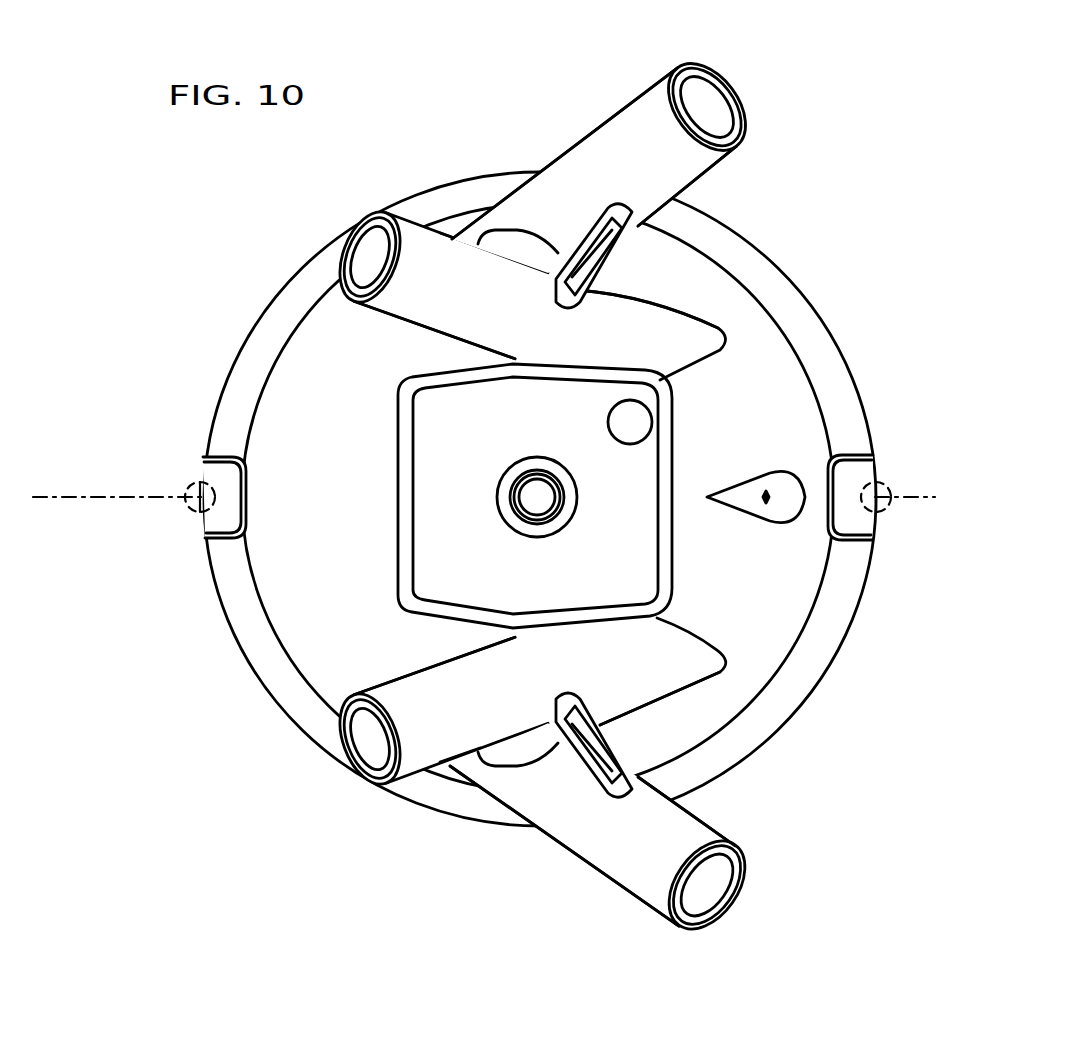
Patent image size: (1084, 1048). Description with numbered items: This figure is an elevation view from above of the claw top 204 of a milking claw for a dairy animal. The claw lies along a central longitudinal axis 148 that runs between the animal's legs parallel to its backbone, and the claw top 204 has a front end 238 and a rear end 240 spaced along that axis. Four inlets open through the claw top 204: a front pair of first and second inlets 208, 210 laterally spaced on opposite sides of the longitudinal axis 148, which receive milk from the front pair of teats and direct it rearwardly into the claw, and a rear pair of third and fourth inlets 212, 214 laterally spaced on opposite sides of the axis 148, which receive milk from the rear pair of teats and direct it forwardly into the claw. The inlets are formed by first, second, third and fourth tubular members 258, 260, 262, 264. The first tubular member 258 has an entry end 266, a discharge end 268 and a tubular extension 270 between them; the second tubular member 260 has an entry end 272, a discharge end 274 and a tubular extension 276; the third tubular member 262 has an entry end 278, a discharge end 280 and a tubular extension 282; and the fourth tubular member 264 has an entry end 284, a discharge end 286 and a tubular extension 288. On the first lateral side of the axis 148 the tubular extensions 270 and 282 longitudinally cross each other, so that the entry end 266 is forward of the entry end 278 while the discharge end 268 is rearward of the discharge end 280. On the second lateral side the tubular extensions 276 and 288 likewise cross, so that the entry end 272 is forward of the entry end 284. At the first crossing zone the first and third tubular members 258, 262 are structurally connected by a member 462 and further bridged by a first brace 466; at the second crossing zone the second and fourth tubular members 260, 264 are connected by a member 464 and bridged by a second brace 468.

The longitudinal axis 148 is at (114, 496).
The claw top 204 is at (858, 388).
The first inlet 208 is at (633, 101).
The second inlet 210 is at (630, 897).
The third inlet 212 is at (415, 233).
The fourth inlet 214 is at (418, 768).
The front end 238 is at (872, 443).
The rear end 240 is at (203, 444).
The first tubular member 258 is at (607, 133).
The second tubular member 260 is at (605, 858).
The third tubular member 262 is at (445, 303).
The fourth tubular member 264 is at (443, 690).
The entry end 266 is at (715, 100).
The discharge end 268 is at (468, 228).
The tubular extension 270 is at (663, 167).
The entry end 272 is at (715, 890).
The discharge end 274 is at (465, 762).
The tubular extension 276 is at (663, 827).
The entry end 278 is at (362, 257).
The discharge end 280 is at (696, 340).
The tubular extension 282 is at (622, 320).
The entry end 284 is at (364, 740).
The discharge end 286 is at (694, 653).
The tubular extension 288 is at (620, 673).
The connecting member 462 is at (533, 248).
The connecting member 464 is at (533, 748).
The first brace 466 is at (556, 290).
The second brace 468 is at (558, 718).